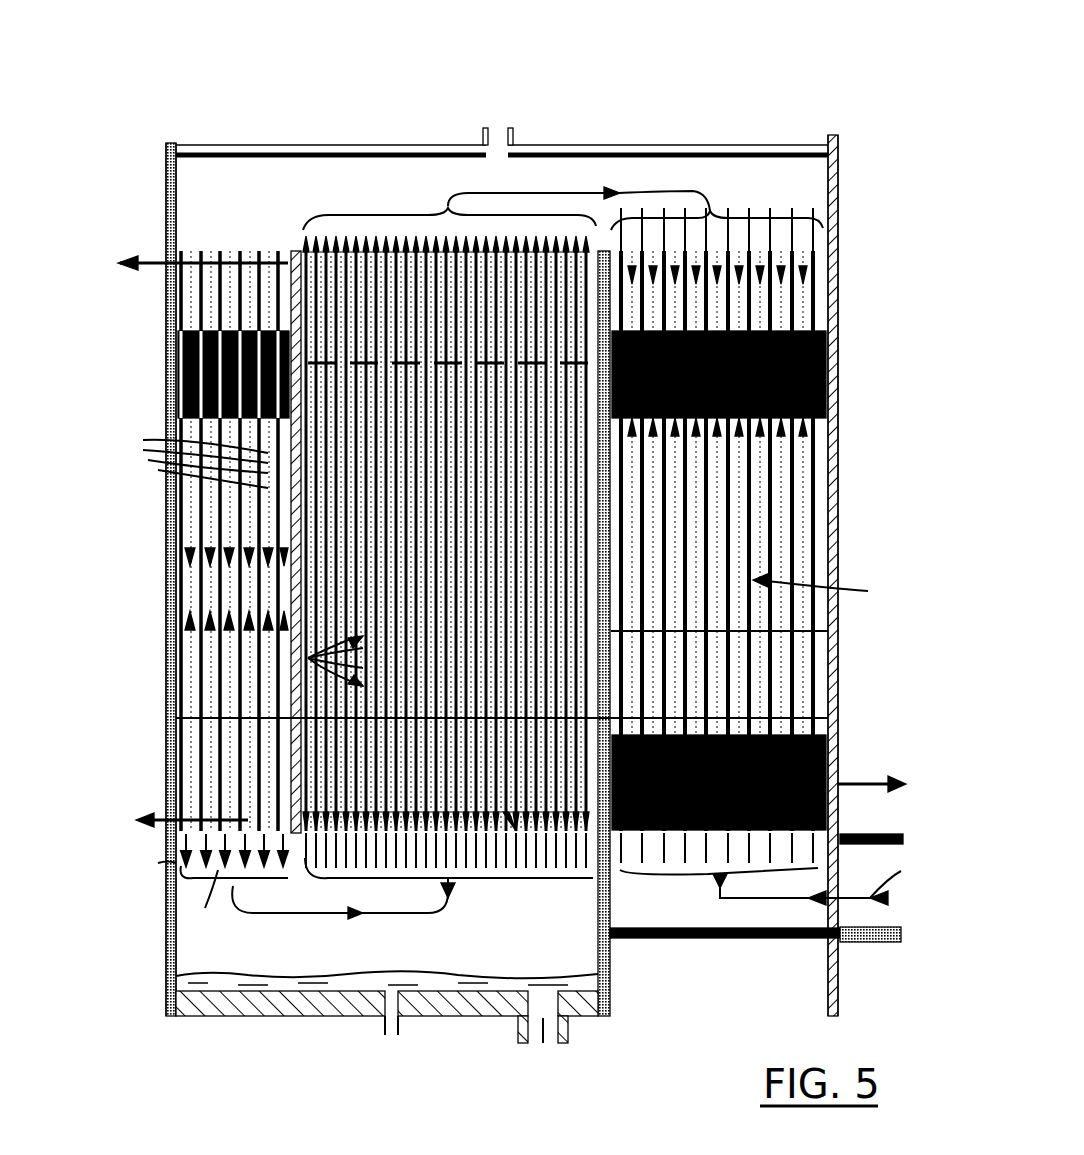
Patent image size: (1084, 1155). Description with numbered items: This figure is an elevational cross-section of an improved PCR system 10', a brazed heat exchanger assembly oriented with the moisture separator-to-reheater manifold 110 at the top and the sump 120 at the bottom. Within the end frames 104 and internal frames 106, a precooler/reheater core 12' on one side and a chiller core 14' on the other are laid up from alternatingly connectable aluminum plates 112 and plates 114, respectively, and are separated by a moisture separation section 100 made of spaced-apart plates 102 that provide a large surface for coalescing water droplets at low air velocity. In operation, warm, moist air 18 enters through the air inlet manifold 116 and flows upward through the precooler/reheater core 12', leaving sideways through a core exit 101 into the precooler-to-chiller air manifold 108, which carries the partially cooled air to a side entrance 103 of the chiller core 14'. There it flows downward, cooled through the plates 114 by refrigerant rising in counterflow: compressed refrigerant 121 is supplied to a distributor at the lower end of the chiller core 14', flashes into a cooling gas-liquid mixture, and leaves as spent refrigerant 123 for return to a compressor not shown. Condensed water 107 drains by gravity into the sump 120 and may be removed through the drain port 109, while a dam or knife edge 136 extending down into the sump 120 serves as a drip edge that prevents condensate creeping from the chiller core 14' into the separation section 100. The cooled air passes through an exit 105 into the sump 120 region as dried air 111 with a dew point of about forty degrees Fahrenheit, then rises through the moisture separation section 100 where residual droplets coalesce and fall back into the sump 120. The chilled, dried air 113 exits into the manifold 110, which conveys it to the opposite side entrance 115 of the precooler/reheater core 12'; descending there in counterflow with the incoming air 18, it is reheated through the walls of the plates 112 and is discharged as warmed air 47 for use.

The PCR system 10' is at (502, 519).
The moisture separator-to-reheater manifold 110 is at (440, 140).
The chilled, dried air 113 is at (350, 232).
The side entrance 115 is at (750, 202).
The spent refrigerant 123 is at (162, 256).
The end frames 104 is at (160, 290).
The side entrance 103 is at (162, 385).
The plates 114 is at (180, 448).
The core exit 101 is at (925, 360).
The internal frames 106 is at (290, 500).
The plates 112 is at (805, 558).
The chiller core 14' is at (179, 558).
The precooler/reheater core 12' is at (833, 593).
The precooler-to-chiller air manifold 108 is at (830, 633).
The plates 102 is at (300, 650).
The moisture separation section 100 is at (388, 742).
The warmed air 47 is at (830, 783).
The warm, moist air 18 is at (788, 877).
The compressed refrigerant 121 is at (150, 822).
The exit 105 is at (168, 878).
The dried air 111 is at (405, 930).
The dam or knife edge 136 is at (288, 835).
The condensed water 107 is at (455, 978).
The sump 120 is at (318, 985).
The drain port 109 is at (555, 1018).
The air inlet manifold 116 is at (740, 930).